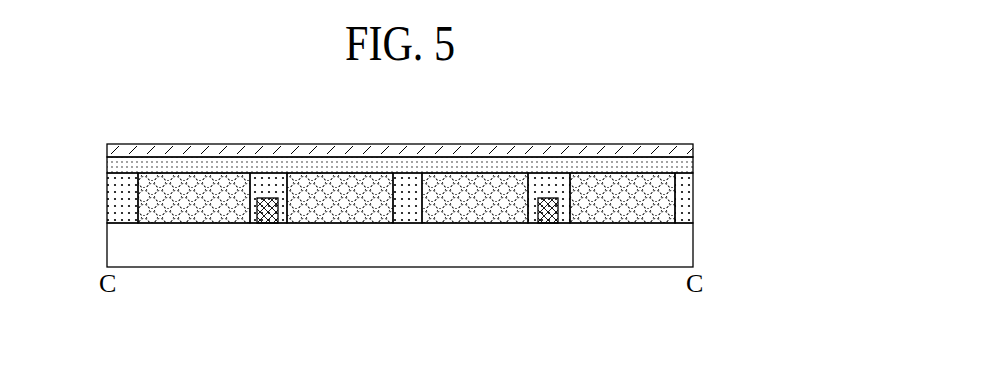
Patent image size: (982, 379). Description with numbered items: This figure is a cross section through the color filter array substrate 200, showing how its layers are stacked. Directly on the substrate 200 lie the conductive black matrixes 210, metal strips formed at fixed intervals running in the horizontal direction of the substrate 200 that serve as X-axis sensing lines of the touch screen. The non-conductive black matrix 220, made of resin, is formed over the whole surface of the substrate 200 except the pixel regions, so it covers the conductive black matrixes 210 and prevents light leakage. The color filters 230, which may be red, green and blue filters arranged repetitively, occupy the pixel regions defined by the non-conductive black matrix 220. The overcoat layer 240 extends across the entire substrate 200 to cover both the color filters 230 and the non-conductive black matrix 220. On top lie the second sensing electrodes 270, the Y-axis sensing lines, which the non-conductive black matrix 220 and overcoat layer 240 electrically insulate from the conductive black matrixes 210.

The substrate 200 is at (693, 250).
The conductive black matrix 210 is at (545, 212).
The non-conductive black matrix 220 is at (693, 203).
The color filter 230 is at (467, 212).
The overcoat layer 240 is at (693, 163).
The second sensing electrode 270 is at (690, 148).